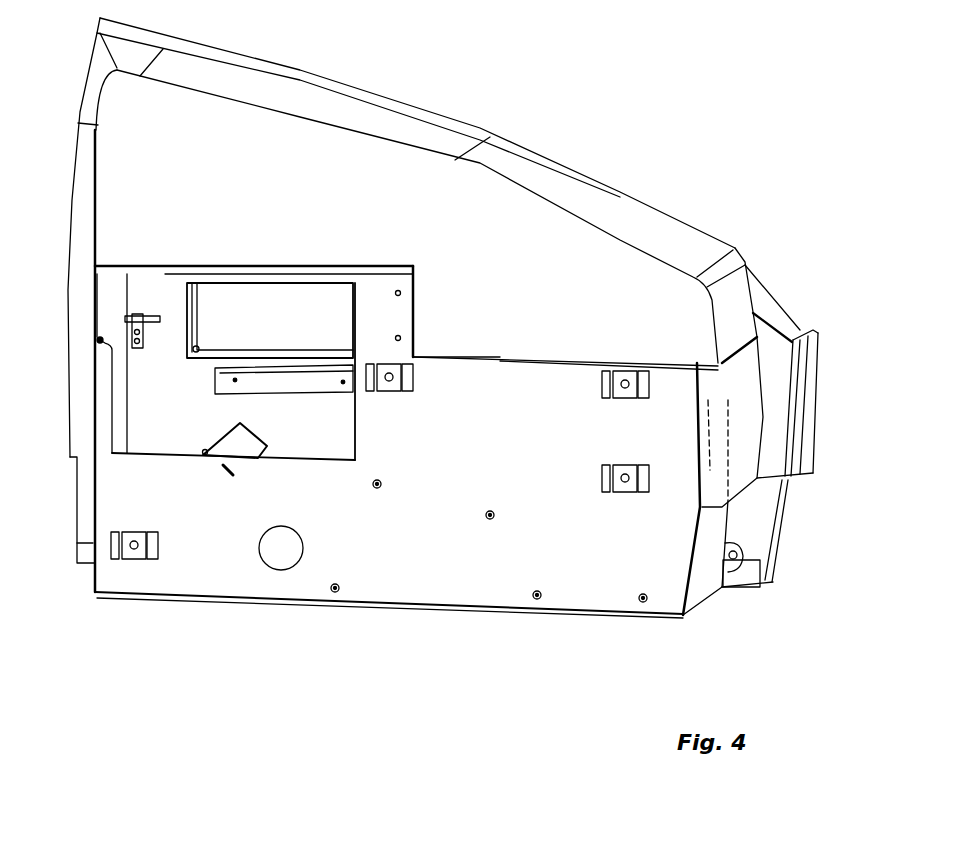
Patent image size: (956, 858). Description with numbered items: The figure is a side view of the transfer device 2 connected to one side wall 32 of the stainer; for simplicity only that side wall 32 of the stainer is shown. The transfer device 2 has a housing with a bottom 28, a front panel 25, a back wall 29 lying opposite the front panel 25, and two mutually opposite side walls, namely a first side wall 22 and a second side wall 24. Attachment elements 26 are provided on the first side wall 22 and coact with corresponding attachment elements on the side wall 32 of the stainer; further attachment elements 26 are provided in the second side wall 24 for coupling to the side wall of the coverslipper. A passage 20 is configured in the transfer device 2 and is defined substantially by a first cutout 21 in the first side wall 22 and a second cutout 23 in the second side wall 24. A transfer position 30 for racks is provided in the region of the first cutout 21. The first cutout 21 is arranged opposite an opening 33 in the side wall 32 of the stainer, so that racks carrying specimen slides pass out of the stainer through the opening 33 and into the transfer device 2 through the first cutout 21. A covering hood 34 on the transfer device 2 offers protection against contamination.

The transfer device 2 is at (353, 136).
The passage 20 is at (227, 297).
The first cutout 21 is at (165, 313).
The first side wall 22 is at (177, 373).
The second cutout 23 is at (293, 460).
The second side wall 24 is at (442, 575).
The front panel 25 is at (748, 448).
The attachment elements 26 is at (387, 383).
The bottom 28 is at (275, 600).
The back wall 29 is at (90, 519).
The transfer position 30 is at (287, 393).
The side wall 32 is at (777, 350).
The opening 33 is at (197, 329).
The covering hood 34 is at (642, 220).